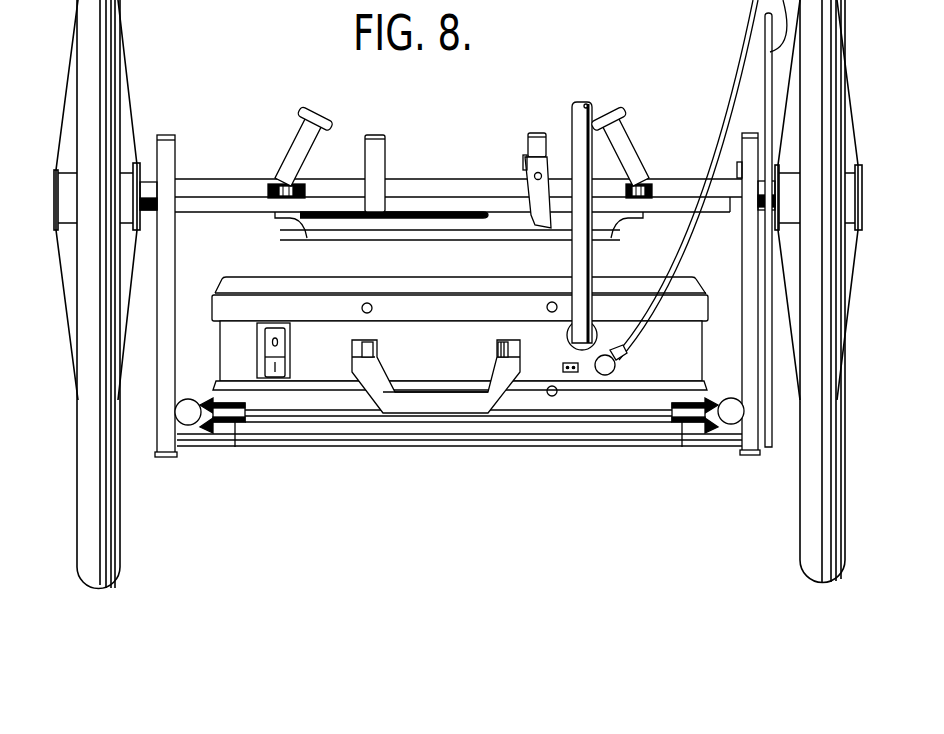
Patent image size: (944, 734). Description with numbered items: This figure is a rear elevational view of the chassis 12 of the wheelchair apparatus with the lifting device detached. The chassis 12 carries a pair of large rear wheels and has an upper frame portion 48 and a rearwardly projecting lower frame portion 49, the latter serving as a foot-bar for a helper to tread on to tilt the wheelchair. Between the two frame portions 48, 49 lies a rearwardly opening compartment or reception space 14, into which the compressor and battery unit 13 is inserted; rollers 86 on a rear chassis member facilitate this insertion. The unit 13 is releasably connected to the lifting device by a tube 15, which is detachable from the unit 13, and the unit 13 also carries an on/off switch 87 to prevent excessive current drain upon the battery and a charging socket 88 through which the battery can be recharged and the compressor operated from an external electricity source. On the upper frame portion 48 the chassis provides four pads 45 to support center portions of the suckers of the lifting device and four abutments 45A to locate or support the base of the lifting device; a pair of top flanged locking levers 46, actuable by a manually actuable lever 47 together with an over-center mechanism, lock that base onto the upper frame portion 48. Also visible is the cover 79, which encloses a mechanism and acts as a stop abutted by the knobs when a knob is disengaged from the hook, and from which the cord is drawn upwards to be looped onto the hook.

The chassis 12 is at (325, 453).
The compressor and battery unit 13 is at (458, 336).
The compartment or reception space 14 is at (221, 267).
The tube 15 is at (573, 133).
The pads 45 is at (270, 184).
The abutments 45A is at (538, 132).
The top flanged locking levers 46 is at (270, 150).
The manually actuable lever 47 is at (303, 220).
The upper frame portion 48 is at (453, 190).
The lower frame portion 49 is at (190, 418).
The cover 79 is at (767, 395).
The rollers 86 is at (232, 420).
The on/off switch 87 is at (282, 358).
The charging socket 88 is at (574, 373).